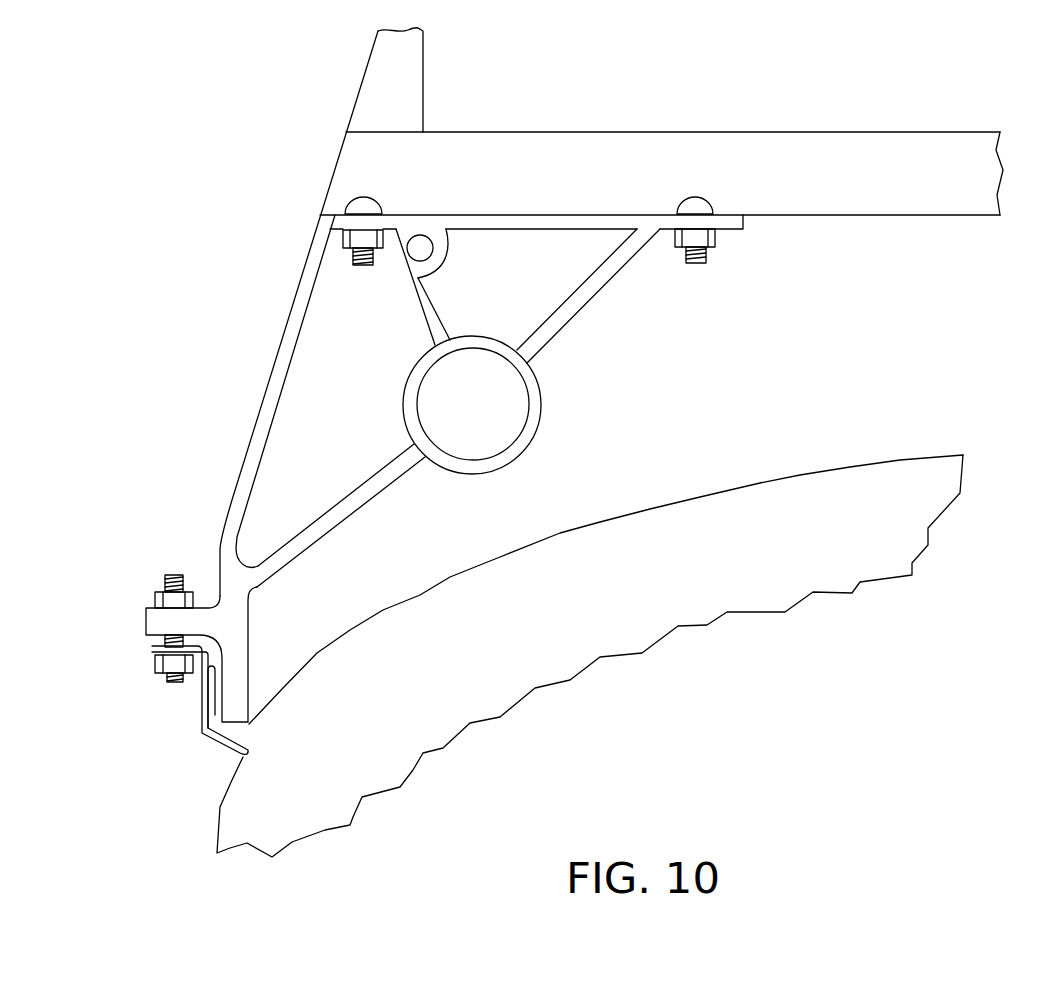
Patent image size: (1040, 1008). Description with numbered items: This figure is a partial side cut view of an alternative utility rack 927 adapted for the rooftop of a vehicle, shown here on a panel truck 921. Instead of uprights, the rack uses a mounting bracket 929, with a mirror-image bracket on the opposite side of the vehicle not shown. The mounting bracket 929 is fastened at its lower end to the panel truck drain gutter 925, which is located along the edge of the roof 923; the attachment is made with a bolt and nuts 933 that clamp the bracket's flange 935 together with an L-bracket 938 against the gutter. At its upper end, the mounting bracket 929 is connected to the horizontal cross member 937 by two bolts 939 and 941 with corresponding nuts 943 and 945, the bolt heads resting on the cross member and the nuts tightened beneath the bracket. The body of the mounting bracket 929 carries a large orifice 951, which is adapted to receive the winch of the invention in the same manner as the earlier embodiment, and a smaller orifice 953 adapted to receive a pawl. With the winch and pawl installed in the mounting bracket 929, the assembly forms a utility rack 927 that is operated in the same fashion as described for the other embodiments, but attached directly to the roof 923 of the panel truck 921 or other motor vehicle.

The panel truck 921 is at (748, 447).
The roof 923 is at (613, 528).
The drain gutter 925 is at (210, 710).
The utility rack 927 is at (396, 375).
The mounting bracket 929 is at (297, 302).
The bolt and nuts 933 is at (158, 582).
The bracket flange 935 is at (157, 623).
The horizontal cross member 937 is at (620, 138).
The L-bracket 938 is at (203, 734).
The bolt 939 is at (366, 195).
The bolt 941 is at (702, 184).
The nut 943 is at (343, 246).
The nut 945 is at (716, 238).
The large orifice 951 is at (533, 367).
The smaller orifice 953 is at (447, 242).